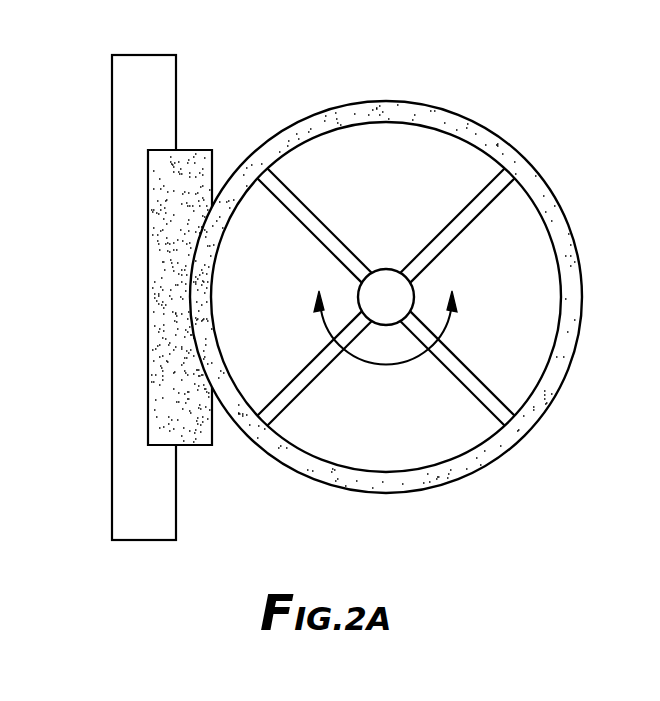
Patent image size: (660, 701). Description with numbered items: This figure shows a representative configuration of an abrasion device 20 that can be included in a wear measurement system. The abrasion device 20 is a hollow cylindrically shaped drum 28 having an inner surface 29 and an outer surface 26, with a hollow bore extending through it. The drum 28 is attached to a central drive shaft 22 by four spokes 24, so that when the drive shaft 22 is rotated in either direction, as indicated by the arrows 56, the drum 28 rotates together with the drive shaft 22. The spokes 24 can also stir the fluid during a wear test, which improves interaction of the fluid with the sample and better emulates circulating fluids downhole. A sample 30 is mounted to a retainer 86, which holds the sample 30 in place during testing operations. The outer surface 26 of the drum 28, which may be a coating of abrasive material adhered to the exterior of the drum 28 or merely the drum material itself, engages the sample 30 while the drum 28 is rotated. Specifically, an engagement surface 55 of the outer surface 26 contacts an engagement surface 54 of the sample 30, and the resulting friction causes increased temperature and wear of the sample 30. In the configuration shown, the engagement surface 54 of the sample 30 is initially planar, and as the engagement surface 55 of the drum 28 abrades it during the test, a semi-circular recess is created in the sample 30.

The abrasion device 20 is at (546, 68).
The drive shaft 22 is at (416, 284).
The spokes 24 is at (421, 250).
The outer surface 26 is at (335, 104).
The drum 28 is at (428, 118).
The inner surface 29 is at (469, 146).
The sample 30 is at (193, 170).
The engagement surface 54 is at (196, 240).
The engagement surface 55 is at (187, 308).
The arrows 56 is at (387, 365).
The retainer 86 is at (128, 500).